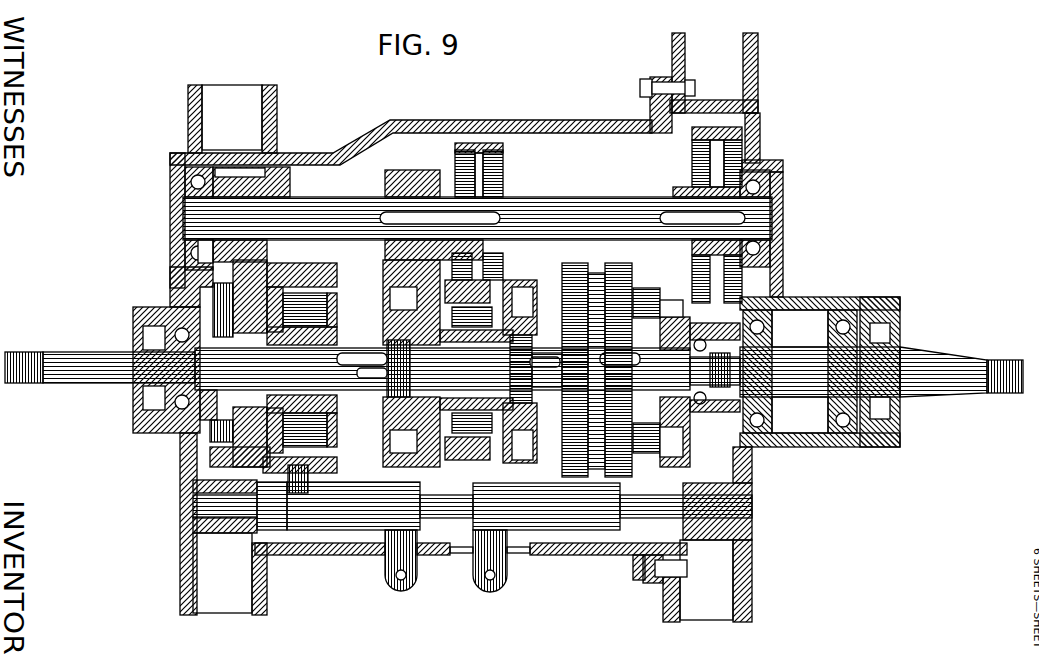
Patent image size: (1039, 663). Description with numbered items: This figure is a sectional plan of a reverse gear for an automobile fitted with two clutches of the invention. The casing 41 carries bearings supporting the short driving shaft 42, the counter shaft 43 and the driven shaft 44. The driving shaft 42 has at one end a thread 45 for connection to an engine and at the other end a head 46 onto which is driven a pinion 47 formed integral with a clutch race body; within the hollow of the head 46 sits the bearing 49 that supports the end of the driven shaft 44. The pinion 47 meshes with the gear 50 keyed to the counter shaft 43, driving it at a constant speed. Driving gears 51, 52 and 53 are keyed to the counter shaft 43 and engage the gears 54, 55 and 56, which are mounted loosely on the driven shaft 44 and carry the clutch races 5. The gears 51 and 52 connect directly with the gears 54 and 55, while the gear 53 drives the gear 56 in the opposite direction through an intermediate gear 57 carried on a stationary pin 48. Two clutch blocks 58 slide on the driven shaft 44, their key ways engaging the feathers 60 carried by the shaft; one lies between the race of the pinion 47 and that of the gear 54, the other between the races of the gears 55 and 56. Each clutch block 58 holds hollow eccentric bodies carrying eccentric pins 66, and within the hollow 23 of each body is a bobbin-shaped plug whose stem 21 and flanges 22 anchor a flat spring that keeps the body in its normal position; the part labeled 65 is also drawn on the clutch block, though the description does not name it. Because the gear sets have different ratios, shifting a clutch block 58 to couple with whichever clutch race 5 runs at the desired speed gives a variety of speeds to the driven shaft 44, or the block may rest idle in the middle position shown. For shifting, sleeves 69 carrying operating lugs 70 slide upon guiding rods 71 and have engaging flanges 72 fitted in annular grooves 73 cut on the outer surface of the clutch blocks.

The casing 41 is at (518, 123).
The gear 50 is at (737, 130).
The driving gear 51 is at (506, 156).
The driving gear 52 is at (393, 177).
The counter shaft 43 is at (562, 198).
The driving gear 53 is at (282, 193).
The stationary pin 48 is at (287, 258).
The clutch ring 65 is at (320, 290).
The gear 55 is at (392, 283).
The gear 54 is at (496, 302).
The eccentric pin 66 is at (643, 288).
The flange 22 is at (337, 300).
The clutch block 58 is at (574, 330).
The annular groove 73 is at (595, 380).
The feather 60 is at (374, 375).
The clutch race 5 is at (254, 432).
The gear 56 is at (233, 363).
The intermediate gear 57 is at (186, 288).
The driven shaft 44 is at (92, 384).
The head 46 is at (712, 425).
The pinion 47 is at (728, 428).
The bearing 49 is at (740, 377).
The driving shaft 42 is at (920, 352).
The thread 45 is at (1000, 394).
The engaging flange 72 is at (293, 485).
The stem 21 is at (285, 532).
The hollow 23 is at (308, 494).
The shifting sleeve 69 is at (343, 532).
The operating lug 70 is at (393, 588).
The guiding rod 71 is at (633, 527).